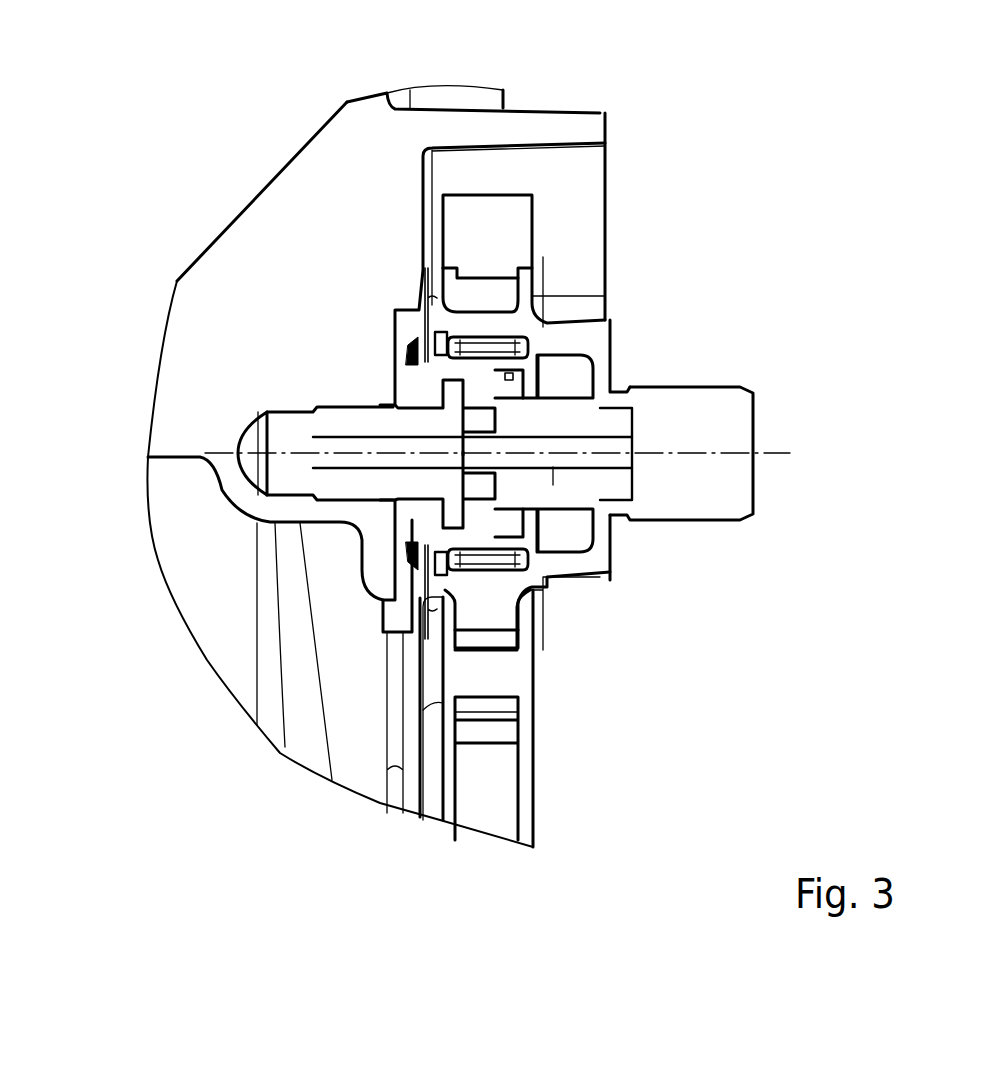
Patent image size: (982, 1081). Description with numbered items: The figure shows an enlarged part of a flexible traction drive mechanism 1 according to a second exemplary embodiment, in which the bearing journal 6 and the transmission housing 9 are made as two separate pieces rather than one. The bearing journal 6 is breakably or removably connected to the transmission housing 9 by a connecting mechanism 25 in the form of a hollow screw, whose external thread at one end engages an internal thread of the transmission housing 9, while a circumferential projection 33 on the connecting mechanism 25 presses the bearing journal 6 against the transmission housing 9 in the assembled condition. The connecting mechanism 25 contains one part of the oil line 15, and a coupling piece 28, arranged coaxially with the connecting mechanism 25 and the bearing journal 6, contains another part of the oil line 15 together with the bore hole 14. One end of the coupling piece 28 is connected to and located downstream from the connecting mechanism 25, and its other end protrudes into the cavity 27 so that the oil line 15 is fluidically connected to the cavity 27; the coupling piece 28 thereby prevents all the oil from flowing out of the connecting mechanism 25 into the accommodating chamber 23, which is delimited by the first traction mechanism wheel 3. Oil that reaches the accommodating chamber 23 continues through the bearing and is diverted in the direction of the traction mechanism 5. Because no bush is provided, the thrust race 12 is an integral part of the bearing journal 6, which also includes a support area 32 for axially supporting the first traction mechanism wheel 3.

The flexible traction drive mechanism 1 is at (448, 190).
The first traction mechanism wheel 3 is at (495, 610).
The traction mechanism 5 is at (480, 203).
The bearing journal 6 is at (425, 512).
The transmission housing 9 is at (327, 233).
The thrust race 12 is at (411, 304).
The bore hole 14 is at (555, 483).
The oil line 15 is at (393, 425).
The accommodating chamber 23 is at (562, 530).
The connecting mechanism 25 is at (368, 443).
The cavity 27 is at (713, 482).
The coupling piece 28 is at (556, 385).
The support area 32 is at (403, 331).
The circumferential projection 33 is at (455, 398).